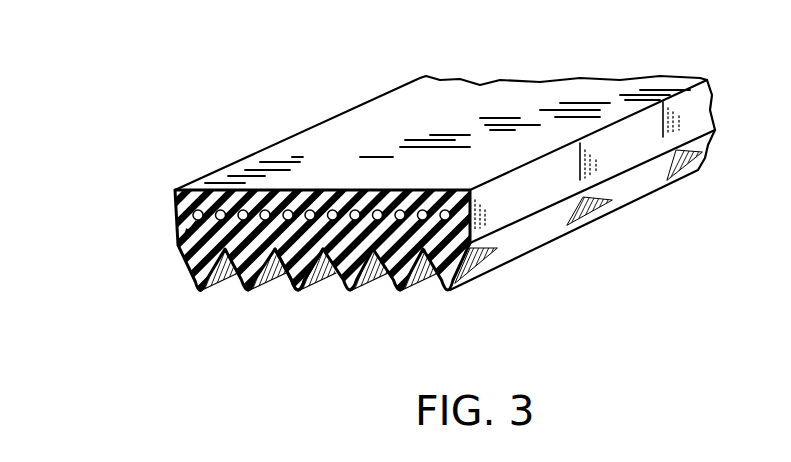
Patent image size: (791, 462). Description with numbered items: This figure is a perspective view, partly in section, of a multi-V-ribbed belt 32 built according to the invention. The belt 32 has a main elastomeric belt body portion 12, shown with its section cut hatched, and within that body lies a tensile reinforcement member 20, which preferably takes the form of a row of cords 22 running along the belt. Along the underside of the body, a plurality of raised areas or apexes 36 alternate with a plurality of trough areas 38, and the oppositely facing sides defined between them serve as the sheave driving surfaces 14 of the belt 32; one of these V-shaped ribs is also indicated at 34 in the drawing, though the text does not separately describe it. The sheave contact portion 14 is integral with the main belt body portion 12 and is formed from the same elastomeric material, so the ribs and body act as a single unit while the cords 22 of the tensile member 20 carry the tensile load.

The main elastomeric belt body portion 12 is at (462, 135).
The sheave driving surfaces 14 is at (520, 261).
The tensile reinforcement member 20 is at (178, 250).
The cords 22 is at (266, 212).
The multi-V-ribbed belt 32 is at (292, 120).
The rib 34 is at (318, 281).
The raised areas or apexes 36 is at (198, 292).
The trough areas 38 is at (275, 262).